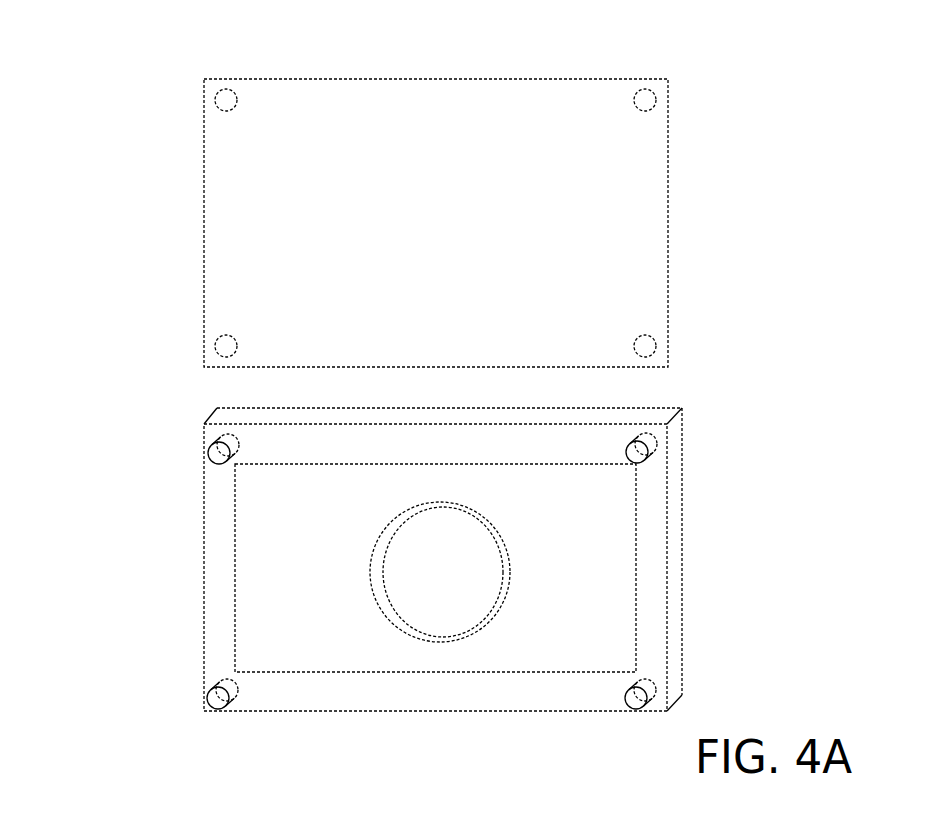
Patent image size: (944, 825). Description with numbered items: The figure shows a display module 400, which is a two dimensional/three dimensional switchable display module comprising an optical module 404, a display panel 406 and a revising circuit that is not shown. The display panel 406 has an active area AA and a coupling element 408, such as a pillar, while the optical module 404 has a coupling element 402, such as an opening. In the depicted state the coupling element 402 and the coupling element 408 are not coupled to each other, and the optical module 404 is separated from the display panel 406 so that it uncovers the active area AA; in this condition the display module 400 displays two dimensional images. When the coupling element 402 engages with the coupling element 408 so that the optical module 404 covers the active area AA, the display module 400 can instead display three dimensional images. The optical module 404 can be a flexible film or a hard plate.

The display module 400 is at (95, 44).
The coupling element 402 is at (645, 346).
The optical module 404 is at (605, 63).
The display panel 406 is at (568, 690).
The coupling element 408 is at (640, 452).
The active area AA is at (501, 648).